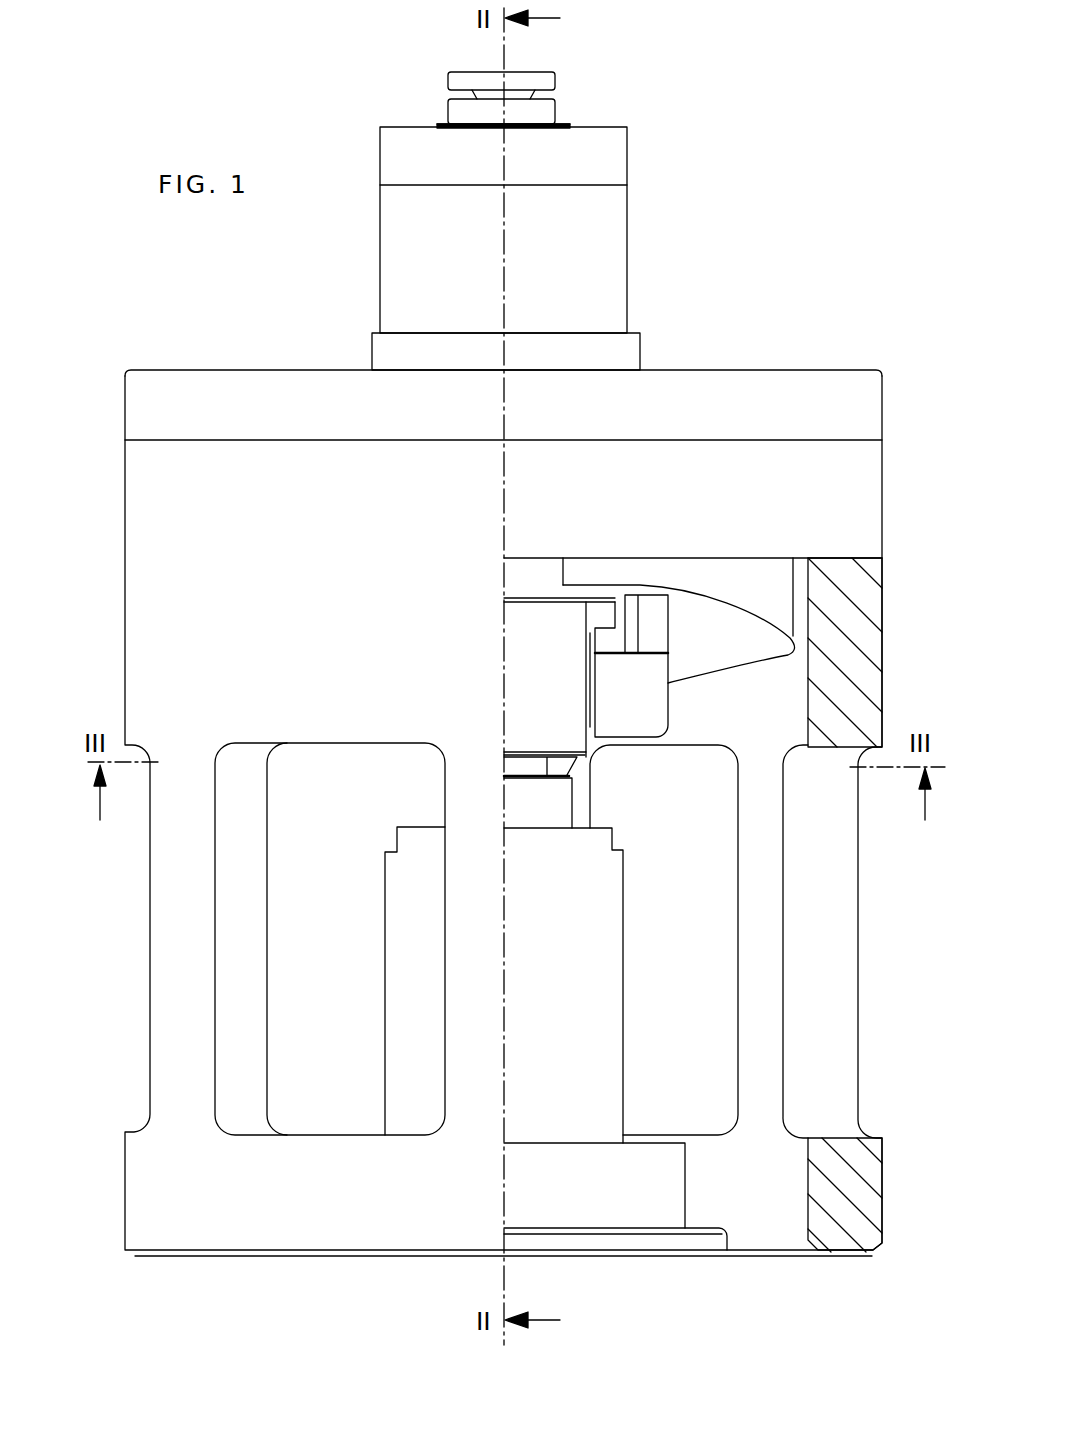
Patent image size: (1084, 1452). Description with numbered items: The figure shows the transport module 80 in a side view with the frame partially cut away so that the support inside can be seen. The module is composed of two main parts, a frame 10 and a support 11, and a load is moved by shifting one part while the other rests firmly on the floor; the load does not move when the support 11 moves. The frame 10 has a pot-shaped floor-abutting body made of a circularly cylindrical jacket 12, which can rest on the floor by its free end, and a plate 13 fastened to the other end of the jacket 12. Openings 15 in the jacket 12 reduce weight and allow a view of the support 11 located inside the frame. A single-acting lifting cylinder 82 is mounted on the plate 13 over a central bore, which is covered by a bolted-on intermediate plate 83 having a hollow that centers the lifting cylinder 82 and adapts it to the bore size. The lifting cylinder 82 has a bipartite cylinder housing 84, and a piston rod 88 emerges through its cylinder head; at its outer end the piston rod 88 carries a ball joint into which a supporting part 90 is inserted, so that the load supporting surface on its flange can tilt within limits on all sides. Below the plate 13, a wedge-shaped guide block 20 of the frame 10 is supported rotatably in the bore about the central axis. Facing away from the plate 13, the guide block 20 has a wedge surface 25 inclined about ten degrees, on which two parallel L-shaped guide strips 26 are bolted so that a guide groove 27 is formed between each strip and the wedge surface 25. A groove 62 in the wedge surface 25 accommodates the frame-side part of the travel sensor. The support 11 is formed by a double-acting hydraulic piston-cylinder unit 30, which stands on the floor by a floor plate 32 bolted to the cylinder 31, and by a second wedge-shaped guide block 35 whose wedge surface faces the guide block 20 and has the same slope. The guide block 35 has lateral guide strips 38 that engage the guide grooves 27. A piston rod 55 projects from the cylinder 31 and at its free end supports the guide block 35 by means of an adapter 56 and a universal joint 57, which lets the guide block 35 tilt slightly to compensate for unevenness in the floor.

The frame 10 is at (900, 476).
The support 11 is at (707, 944).
The circularly cylindrical jacket 12 is at (838, 536).
The plate 13 is at (825, 415).
The openings 15 is at (331, 1046).
The wedge-shaped guide block 20 is at (760, 587).
The wedge surface 25 is at (622, 617).
The L-shaped guide strips 26 is at (640, 700).
The guide groove 27 is at (757, 637).
The hydraulic piston-cylinder unit 30 is at (646, 1000).
The cylinder 31 is at (578, 1067).
The floor plate 32 is at (625, 1243).
The second wedge-shaped guide block 35 is at (548, 643).
The lateral guide strips 38 is at (607, 613).
The piston rod 55 is at (548, 800).
The adapter 56 is at (520, 764).
The universal joint 57 is at (610, 760).
The groove 62 is at (542, 575).
The transport module 80 is at (238, 322).
The single-acting lifting cylinder 82 is at (650, 157).
The intermediate plate 83 is at (397, 351).
The cylinder housing 84 is at (597, 217).
The piston rod 88 is at (537, 108).
The supporting part 90 is at (428, 73).